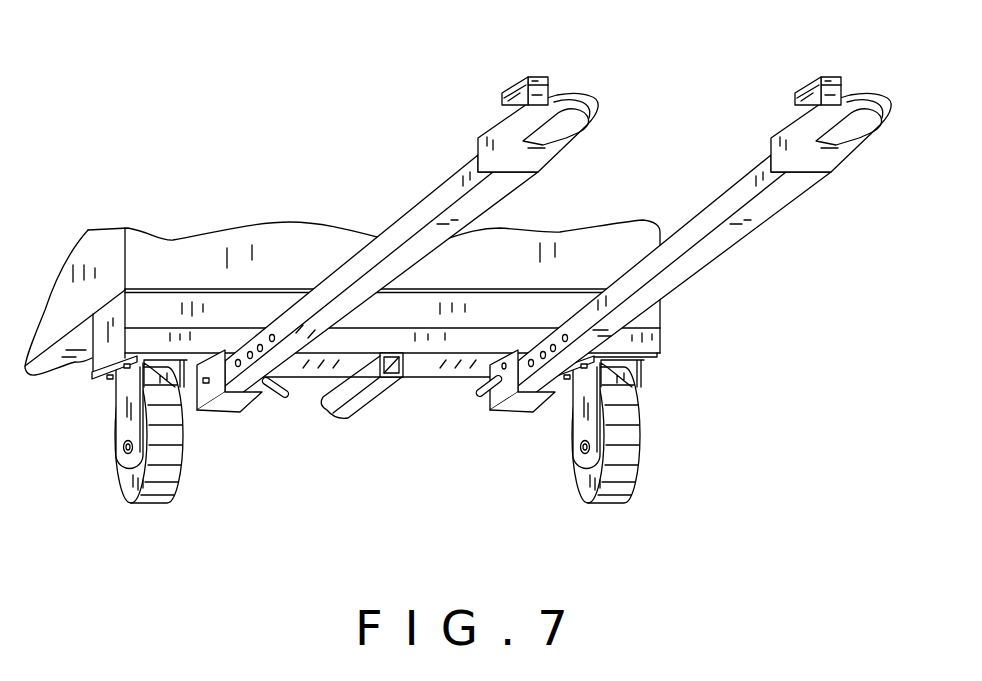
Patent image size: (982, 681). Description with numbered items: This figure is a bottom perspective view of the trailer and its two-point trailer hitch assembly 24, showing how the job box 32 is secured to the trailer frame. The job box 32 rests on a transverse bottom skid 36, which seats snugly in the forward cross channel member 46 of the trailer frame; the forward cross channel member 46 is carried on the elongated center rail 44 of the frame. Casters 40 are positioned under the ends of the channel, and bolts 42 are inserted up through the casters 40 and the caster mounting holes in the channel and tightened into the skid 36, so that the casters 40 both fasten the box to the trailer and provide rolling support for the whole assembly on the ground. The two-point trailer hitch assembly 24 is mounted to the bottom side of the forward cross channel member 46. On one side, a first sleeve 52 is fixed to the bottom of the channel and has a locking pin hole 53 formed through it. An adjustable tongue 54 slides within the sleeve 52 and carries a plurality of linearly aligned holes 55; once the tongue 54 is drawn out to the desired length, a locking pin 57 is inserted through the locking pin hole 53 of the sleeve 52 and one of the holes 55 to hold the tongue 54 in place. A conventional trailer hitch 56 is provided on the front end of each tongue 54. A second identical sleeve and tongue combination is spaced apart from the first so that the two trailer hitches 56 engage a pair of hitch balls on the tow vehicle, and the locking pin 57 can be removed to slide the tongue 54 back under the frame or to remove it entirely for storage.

The two-point trailer hitch assembly 24 is at (458, 254).
The job box 32 is at (317, 237).
The transverse bottom skid 36 is at (187, 307).
The casters 40 is at (375, 429).
The bolts 42 is at (113, 382).
The center rail 44 is at (372, 397).
The forward cross channel member 46 is at (640, 342).
The first sleeve 52 is at (518, 403).
The locking pin hole 53 is at (504, 363).
The adjustable tongue 54 is at (558, 236).
The linearly aligned holes 55 is at (563, 337).
The trailer hitch 56 is at (565, 97).
The locking pin 57 is at (473, 393).